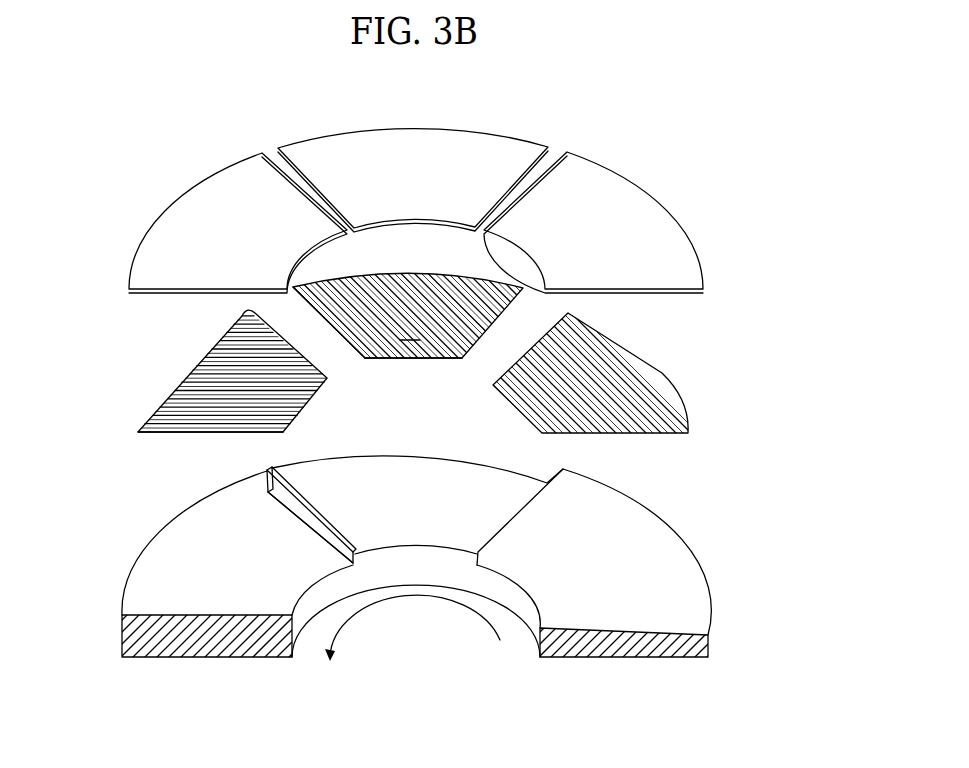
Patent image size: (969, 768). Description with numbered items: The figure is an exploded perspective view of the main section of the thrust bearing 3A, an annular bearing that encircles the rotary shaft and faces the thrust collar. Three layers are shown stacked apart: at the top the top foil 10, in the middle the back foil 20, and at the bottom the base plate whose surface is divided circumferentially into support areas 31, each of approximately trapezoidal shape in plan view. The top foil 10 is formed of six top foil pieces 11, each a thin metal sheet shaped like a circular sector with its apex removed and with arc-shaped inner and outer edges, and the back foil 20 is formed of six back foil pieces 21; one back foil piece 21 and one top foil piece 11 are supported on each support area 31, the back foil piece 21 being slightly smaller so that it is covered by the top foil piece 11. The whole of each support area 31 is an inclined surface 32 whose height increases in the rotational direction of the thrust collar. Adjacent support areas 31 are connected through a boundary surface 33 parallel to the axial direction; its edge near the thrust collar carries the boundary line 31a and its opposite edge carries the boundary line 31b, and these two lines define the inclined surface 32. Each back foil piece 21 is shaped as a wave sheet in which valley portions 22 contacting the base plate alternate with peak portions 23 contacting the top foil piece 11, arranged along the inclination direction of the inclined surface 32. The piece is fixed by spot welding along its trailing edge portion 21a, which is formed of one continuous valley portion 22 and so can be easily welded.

The thrust bearing 3A is at (636, 139).
The top foil 10 is at (501, 128).
The top foil piece 11 is at (203, 212).
The back foil 20 is at (695, 408).
The back foil piece 21 is at (168, 373).
The edge portion 21a is at (334, 338).
The valley portion 22 is at (365, 358).
The peak portion 23 is at (412, 327).
The support area 31 is at (338, 474).
The boundary line 31a is at (523, 505).
The boundary line 31b is at (303, 523).
The inclined surface 32 is at (437, 492).
The boundary surface 33 is at (287, 502).